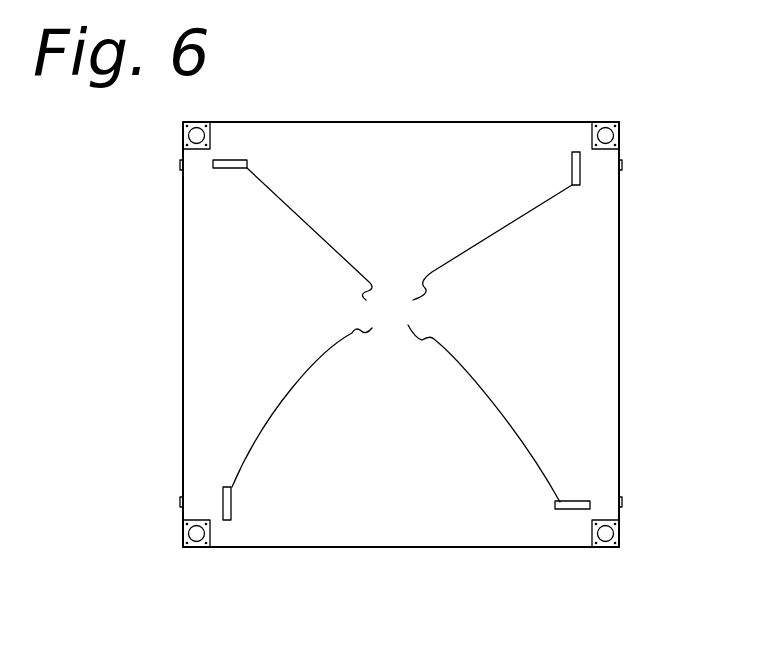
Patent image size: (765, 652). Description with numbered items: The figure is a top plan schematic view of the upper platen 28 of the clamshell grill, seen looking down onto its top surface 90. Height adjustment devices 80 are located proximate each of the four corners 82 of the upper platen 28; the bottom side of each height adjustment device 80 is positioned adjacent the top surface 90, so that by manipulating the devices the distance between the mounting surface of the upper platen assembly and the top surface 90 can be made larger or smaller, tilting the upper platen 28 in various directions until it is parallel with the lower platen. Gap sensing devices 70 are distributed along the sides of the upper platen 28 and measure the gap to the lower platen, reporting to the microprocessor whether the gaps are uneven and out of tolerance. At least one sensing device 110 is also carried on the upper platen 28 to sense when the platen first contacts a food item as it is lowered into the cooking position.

The upper platen 28 is at (202, 337).
The top surface 90 is at (596, 323).
The corners 82 is at (203, 120).
The height adjustment devices 80 is at (190, 133).
The gap sensing devices 70 is at (180, 168).
The sensing device 110 is at (401, 336).